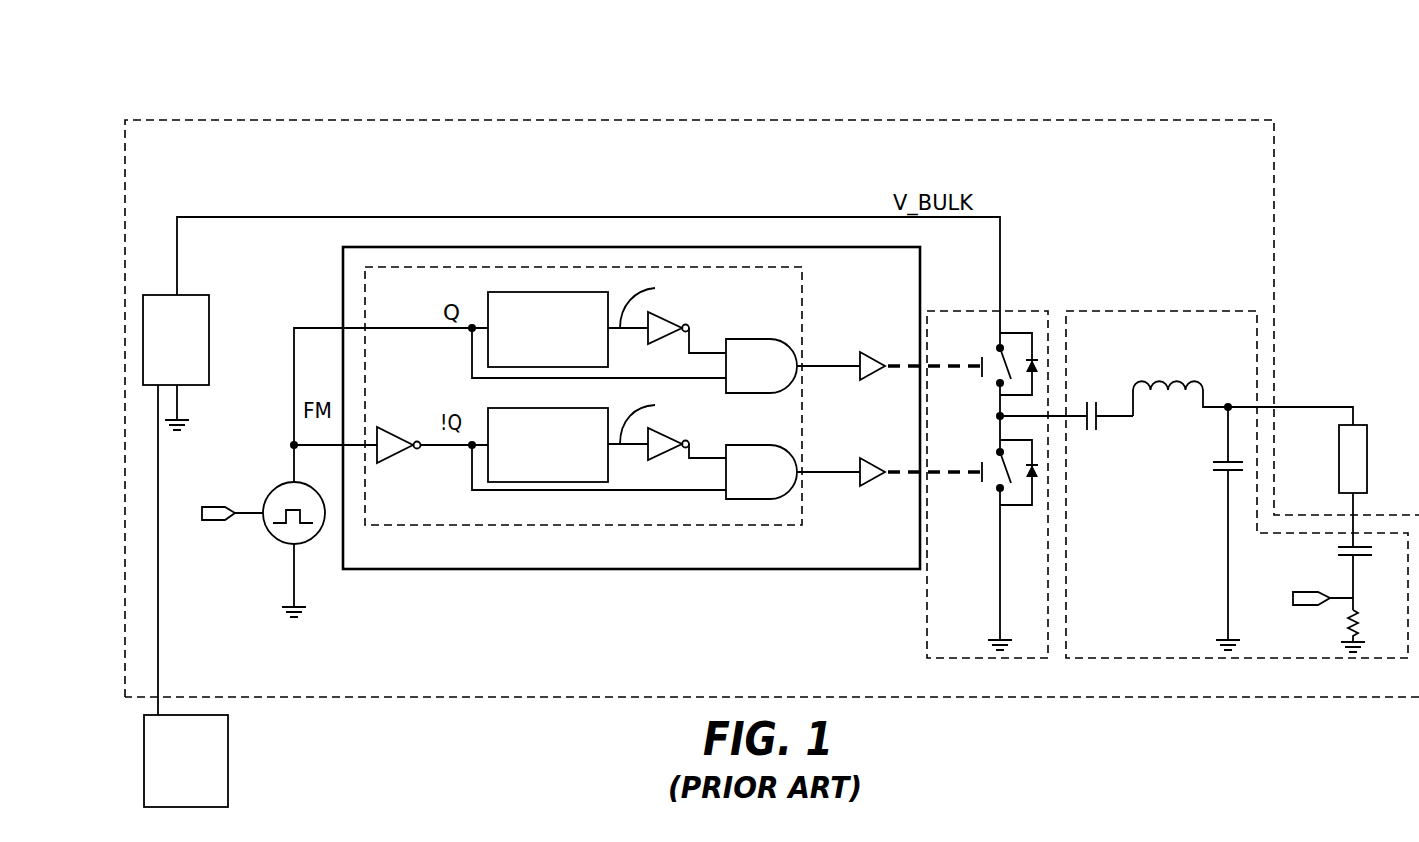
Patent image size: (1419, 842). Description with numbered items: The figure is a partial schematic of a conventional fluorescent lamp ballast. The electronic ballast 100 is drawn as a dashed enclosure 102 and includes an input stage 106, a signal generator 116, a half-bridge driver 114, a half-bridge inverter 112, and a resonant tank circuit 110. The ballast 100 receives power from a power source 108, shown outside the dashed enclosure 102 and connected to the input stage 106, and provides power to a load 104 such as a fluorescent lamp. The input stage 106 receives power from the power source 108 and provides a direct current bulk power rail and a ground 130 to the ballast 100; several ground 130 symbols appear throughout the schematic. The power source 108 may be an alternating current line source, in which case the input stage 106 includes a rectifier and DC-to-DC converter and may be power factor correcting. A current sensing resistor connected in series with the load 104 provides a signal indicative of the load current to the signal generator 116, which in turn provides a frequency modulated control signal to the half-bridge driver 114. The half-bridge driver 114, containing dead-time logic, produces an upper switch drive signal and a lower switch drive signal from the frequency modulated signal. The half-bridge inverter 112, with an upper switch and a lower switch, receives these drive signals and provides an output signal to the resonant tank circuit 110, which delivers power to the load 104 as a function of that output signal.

The electronic ballast 100 is at (211, 83).
The power converter circuit 102 is at (1077, 120).
The load 104 is at (1358, 425).
The input stage 106 is at (193, 293).
The power source 108 is at (228, 762).
The resonant tank circuit 110 is at (1133, 311).
The half-bridge inverter 112 is at (1010, 312).
The half-bridge driver 114 is at (563, 571).
The signal generator 116 is at (300, 547).
The ground 130 is at (194, 430).